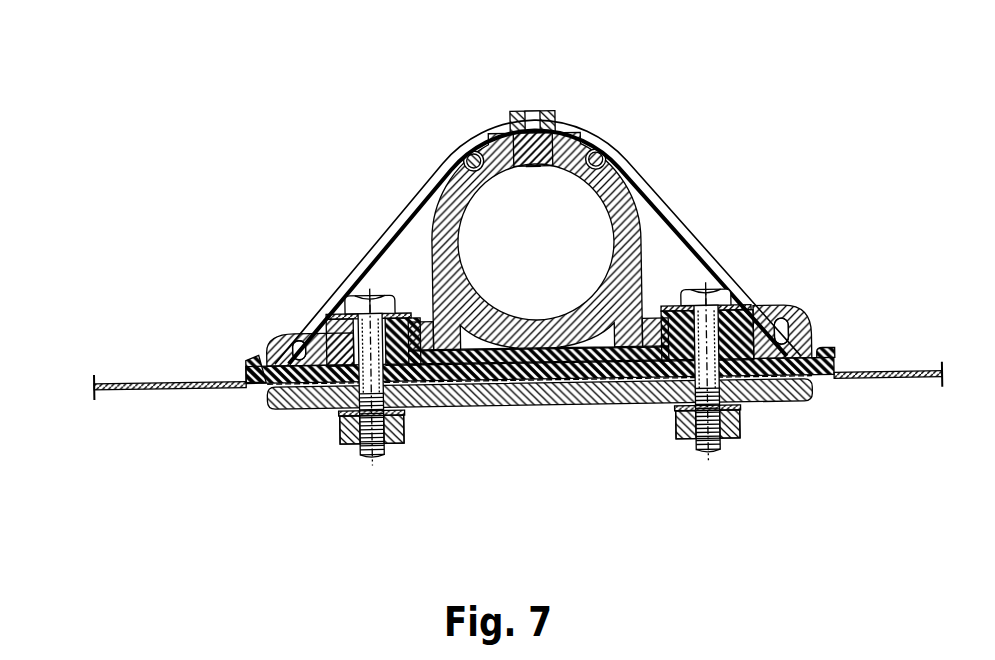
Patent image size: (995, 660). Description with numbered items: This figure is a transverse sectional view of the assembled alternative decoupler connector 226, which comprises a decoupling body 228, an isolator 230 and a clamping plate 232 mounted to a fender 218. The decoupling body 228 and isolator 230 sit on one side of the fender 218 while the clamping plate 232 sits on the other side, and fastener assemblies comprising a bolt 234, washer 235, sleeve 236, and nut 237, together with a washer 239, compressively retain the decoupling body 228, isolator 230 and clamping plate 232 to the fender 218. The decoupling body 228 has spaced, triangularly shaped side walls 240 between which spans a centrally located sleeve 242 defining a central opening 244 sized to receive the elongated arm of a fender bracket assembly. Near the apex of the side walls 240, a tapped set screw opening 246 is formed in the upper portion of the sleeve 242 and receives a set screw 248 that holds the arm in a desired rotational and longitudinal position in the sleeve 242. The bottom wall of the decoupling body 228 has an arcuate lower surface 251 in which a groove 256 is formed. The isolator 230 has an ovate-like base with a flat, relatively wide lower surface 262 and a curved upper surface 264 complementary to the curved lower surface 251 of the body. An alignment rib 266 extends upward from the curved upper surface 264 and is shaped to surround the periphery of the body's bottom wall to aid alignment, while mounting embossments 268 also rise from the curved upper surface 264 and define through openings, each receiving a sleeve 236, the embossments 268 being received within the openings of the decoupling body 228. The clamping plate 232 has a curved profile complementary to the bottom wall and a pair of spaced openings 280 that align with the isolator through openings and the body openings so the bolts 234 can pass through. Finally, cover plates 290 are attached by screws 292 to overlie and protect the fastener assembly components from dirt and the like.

The fender 218 is at (873, 372).
The alternative decoupler connector 226 is at (849, 120).
The decoupling body 228 is at (395, 190).
The isolator 230 is at (822, 347).
The clamping plate 232 is at (804, 389).
The bolt 234 is at (361, 286).
The washer 235 is at (322, 305).
The sleeve 236 is at (287, 400).
The nut 237 is at (383, 407).
The washer 239 is at (392, 400).
The side walls 240 is at (634, 165).
The sleeve 242 is at (632, 227).
The central opening 244 is at (543, 250).
The tapped set screw opening 246 is at (549, 117).
The set screw 248 is at (543, 107).
The lower surface 251 is at (490, 398).
The groove 256 is at (275, 318).
The lower surface 262 is at (593, 371).
The curved upper surface 264 is at (538, 398).
The alignment rib 266 is at (240, 350).
The mounting embossments 268 is at (298, 325).
The spaced openings 280 is at (340, 407).
The cover plates 290 is at (437, 187).
The screws 292 is at (465, 143).